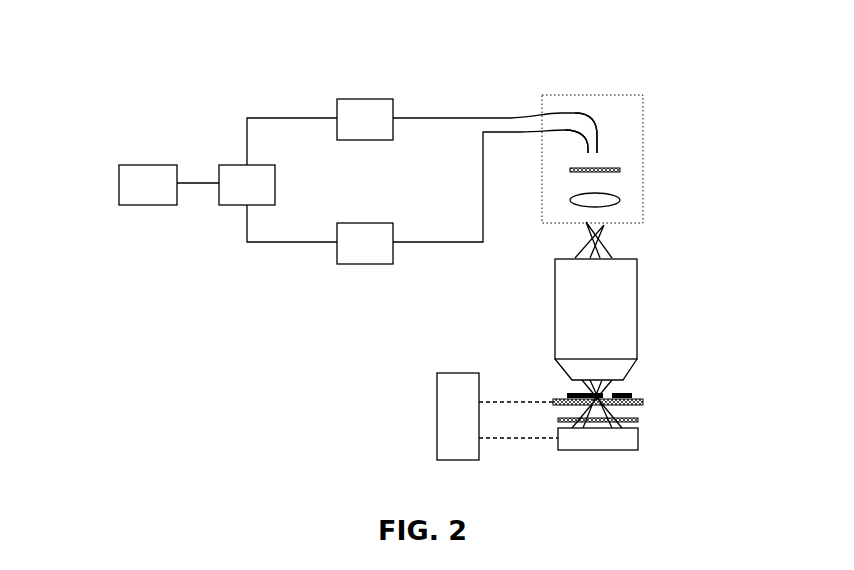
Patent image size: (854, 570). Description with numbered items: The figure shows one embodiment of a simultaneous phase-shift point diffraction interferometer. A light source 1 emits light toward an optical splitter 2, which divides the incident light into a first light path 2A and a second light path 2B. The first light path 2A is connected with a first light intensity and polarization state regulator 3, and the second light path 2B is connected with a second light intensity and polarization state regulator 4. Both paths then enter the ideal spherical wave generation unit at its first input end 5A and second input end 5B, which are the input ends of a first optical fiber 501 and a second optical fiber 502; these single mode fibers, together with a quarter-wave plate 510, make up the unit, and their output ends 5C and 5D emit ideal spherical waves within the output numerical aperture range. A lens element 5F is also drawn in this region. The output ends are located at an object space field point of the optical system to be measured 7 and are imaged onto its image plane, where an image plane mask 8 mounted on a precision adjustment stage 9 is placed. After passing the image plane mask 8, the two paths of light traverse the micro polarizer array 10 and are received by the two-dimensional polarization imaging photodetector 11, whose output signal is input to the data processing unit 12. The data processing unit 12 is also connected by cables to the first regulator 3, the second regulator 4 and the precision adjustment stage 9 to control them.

The light source 1 is at (152, 165).
The optical splitter 2 is at (235, 165).
The first light path 2A is at (278, 118).
The second light path 2B is at (275, 247).
The first light intensity and polarization state regulator 3 is at (360, 99).
The second light intensity and polarization state regulator 4 is at (360, 264).
The first input end of the ideal spherical wave generation unit 5A is at (522, 120).
The second input end of the ideal spherical wave generation unit 5B is at (520, 132).
The first optical fiber 501 is at (595, 135).
The second optical fiber 502 is at (557, 130).
The quarter-wave plate 510 is at (607, 168).
The collimating lens 5F is at (600, 195).
The output end of the ideal spherical wave generation unit 5D is at (592, 222).
The first output end of the ideal spherical wave generation unit 5C is at (603, 226).
The optical system to be measured 7 is at (637, 305).
The image plane mask 8 is at (633, 390).
The precision adjustment stage 9 is at (643, 400).
The micro polarizer array 10 is at (640, 420).
The two-dimensional polarization imaging photodetector 11 is at (638, 448).
The data processing unit 12 is at (437, 442).